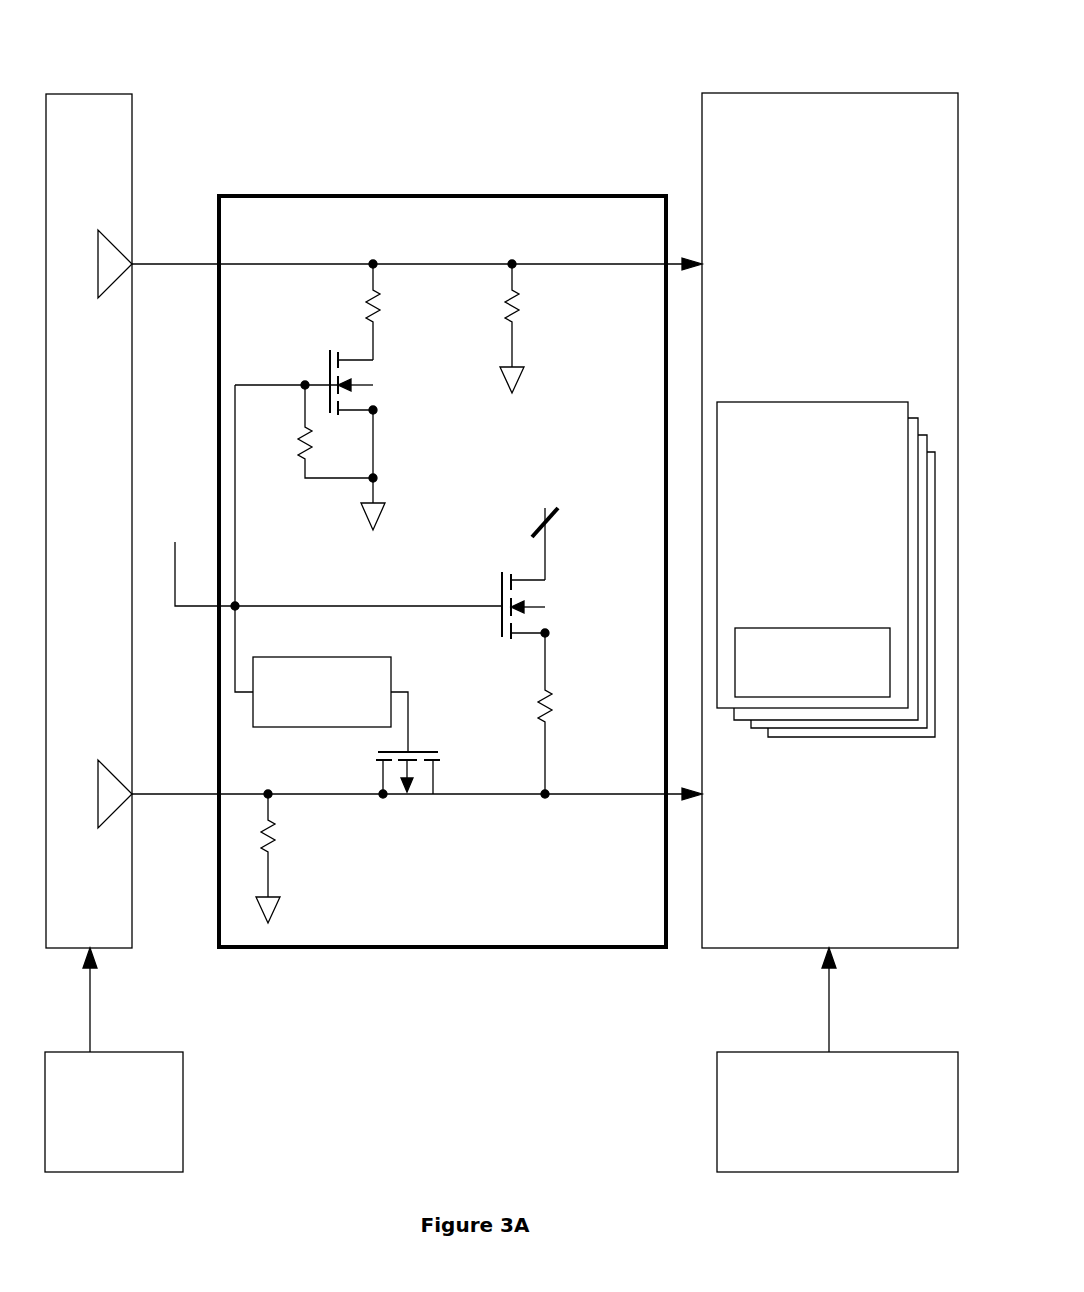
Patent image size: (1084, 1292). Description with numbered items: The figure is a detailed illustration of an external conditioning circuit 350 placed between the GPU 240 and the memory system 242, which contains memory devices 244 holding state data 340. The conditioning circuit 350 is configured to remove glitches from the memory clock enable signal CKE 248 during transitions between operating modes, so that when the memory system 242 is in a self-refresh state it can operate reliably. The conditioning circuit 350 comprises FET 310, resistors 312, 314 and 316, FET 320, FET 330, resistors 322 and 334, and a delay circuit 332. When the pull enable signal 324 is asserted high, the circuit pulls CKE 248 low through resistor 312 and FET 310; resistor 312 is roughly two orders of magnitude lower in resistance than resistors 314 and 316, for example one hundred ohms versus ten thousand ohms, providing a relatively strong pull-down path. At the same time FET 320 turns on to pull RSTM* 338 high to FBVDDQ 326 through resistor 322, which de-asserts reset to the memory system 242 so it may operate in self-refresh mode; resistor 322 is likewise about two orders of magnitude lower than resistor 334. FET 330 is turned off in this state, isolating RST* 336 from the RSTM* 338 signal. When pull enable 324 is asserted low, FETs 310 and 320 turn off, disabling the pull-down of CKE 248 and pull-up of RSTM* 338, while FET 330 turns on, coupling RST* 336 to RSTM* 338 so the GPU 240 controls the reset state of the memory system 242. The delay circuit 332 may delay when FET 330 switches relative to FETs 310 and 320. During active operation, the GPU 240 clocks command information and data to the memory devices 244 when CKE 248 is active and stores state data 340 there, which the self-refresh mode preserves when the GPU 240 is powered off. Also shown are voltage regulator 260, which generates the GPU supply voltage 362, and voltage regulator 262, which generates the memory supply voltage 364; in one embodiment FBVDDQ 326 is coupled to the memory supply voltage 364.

The GPU 240 is at (118, 92).
The memory system 242 is at (811, 889).
The memory devices 244 is at (794, 461).
The memory clock enable signal CKE 248 is at (562, 267).
The voltage regulator 260 is at (96, 1163).
The voltage regulator 262 is at (818, 1151).
The field-effect transistor 310 is at (331, 352).
The resistor 312 is at (382, 294).
The resistor 314 is at (503, 320).
The resistor 316 is at (298, 460).
The field-effect transistor 320 is at (502, 573).
The resistor 322 is at (553, 716).
The pull enable signal 324 is at (329, 538).
The FBVDDQ 326 is at (552, 525).
The field-effect transistor 330 is at (432, 750).
The delay circuit 332 is at (303, 716).
The resistor 334 is at (278, 838).
The RST* signal 336 is at (363, 797).
The RSTM* signal 338 is at (520, 797).
The state data 340 is at (794, 686).
The conditioning circuit 350 is at (410, 950).
The GPU supply voltage 362 is at (90, 1017).
The memory supply voltage 364 is at (829, 1030).